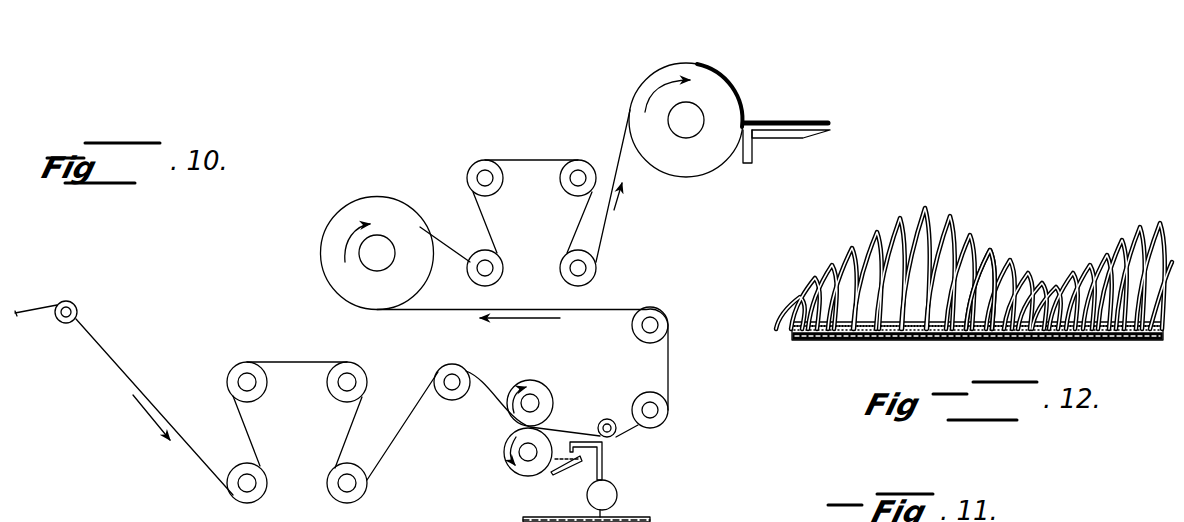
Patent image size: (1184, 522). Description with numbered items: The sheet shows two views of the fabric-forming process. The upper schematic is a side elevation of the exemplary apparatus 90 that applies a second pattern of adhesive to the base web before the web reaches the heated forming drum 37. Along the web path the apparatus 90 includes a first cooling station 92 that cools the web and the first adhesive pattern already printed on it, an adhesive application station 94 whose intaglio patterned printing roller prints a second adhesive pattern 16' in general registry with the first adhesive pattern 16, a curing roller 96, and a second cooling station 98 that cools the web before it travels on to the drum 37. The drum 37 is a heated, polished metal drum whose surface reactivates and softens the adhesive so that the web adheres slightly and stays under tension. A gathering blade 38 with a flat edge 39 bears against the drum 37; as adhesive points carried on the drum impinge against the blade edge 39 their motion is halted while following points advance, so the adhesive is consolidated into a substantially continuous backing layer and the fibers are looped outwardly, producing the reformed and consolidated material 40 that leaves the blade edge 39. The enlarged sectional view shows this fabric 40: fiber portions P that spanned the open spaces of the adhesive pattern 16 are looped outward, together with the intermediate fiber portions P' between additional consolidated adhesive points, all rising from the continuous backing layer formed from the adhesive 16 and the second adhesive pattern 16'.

In FIG. 10, the apparatus 90 is at (403, 188).
In FIG. 10, the first cooling station 92 is at (305, 465).
In FIG. 10, the adhesive application station 94 is at (626, 450).
In FIG. 10, the curing roller 96 is at (324, 251).
In FIG. 10, the second cooling station 98 is at (545, 213).
In FIG. 10, the heated forming drum 37 is at (707, 81).
In FIG. 10, the gathering blade 38 is at (745, 166).
In FIG. 10, the flat edge 39 is at (743, 102).
In FIG. 10, the reformed and consolidated material 40 is at (781, 118).
In FIG. 12, the reformed and consolidated material 40 is at (1052, 250).
In FIG. 12, the fiber portion P is at (974, 244).
In FIG. 12, the intermediate fiber portion P' is at (1000, 264).
In FIG. 12, the adhesive pattern 16 is at (952, 328).
In FIG. 12, the second adhesive pattern 16' is at (969, 361).